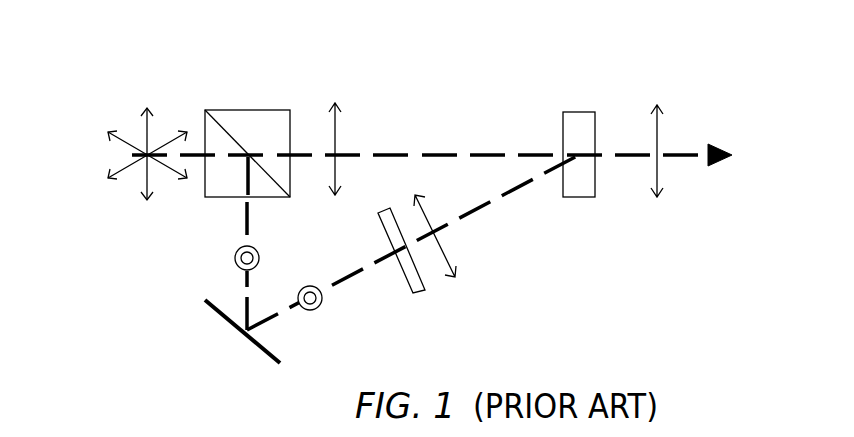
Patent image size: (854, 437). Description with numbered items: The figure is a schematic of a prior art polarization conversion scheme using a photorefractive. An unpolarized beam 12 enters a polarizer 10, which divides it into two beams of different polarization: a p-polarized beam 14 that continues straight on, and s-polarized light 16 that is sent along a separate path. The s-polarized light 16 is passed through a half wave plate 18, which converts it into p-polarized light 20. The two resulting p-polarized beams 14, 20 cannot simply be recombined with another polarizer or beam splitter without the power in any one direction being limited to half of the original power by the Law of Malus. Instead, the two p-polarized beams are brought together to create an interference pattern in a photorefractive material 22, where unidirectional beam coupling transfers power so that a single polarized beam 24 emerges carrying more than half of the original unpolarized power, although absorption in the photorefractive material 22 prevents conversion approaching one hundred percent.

The polarizer 10 is at (240, 110).
The unpolarized beam 12 is at (125, 108).
The p-polarized beam 14 is at (337, 137).
The s-polarized light 16 is at (237, 262).
The half wave plate 18 is at (422, 293).
The p-polarized light 20 is at (445, 252).
The photorefractive material 22 is at (580, 112).
The single polarized beam 24 is at (658, 138).